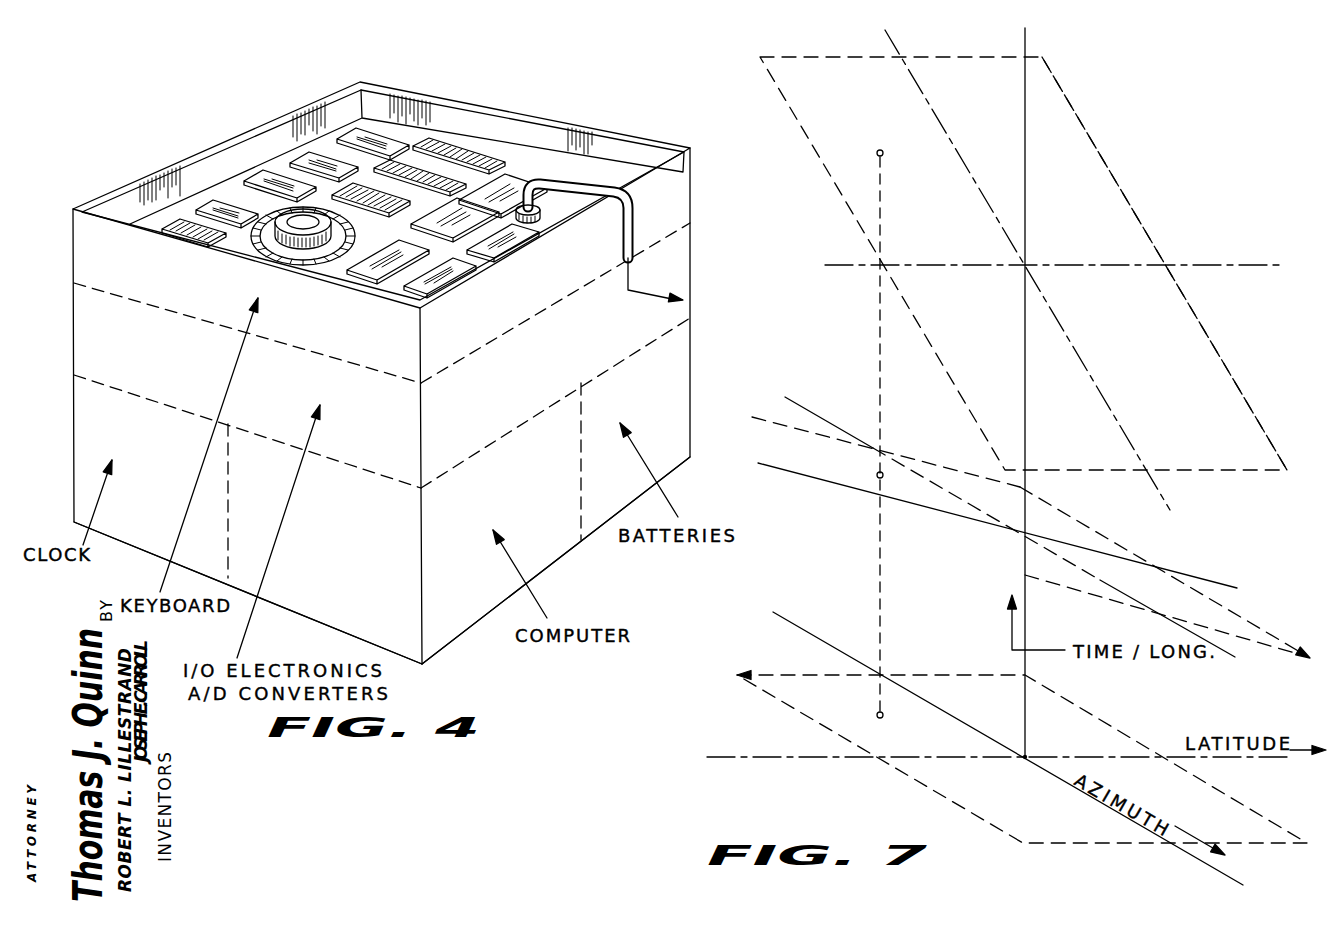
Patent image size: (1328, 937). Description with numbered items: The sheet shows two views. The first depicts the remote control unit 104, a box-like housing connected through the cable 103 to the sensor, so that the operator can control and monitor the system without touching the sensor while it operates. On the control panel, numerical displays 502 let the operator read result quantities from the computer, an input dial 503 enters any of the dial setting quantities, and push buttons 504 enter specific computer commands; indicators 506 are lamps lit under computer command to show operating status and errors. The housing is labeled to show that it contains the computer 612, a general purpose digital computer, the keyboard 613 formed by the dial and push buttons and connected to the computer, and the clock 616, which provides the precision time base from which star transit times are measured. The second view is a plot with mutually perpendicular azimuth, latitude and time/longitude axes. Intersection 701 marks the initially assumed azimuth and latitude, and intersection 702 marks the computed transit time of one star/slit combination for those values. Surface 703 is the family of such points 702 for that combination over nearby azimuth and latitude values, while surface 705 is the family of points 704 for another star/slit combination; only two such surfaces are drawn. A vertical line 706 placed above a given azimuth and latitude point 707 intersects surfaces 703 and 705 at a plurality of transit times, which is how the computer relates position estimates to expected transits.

In FIG. 4, the cable 103 is at (632, 214).
In FIG. 4, the remote control unit 104 is at (550, 570).
In FIG. 4, the numerical displays 502 is at (478, 152).
In FIG. 4, the input dial 503 is at (308, 264).
In FIG. 4, the push buttons 504 is at (304, 160).
In FIG. 4, the indicators 506 is at (588, 183).
In FIG. 4, the computer 612 is at (352, 619).
In FIG. 4, the keyboard 613 is at (88, 251).
In FIG. 4, the clock 616 is at (82, 488).
In FIG. 7, the intersection 701 is at (1024, 758).
In FIG. 7, the intersection 702 is at (1026, 264).
In FIG. 7, the surface 703 is at (1220, 392).
In FIG. 7, the points 704 is at (1026, 533).
In FIG. 7, the surface 705 is at (1233, 619).
In FIG. 7, the vertical line 706 is at (879, 560).
In FIG. 7, the azimuth and latitude point 707 is at (877, 715).